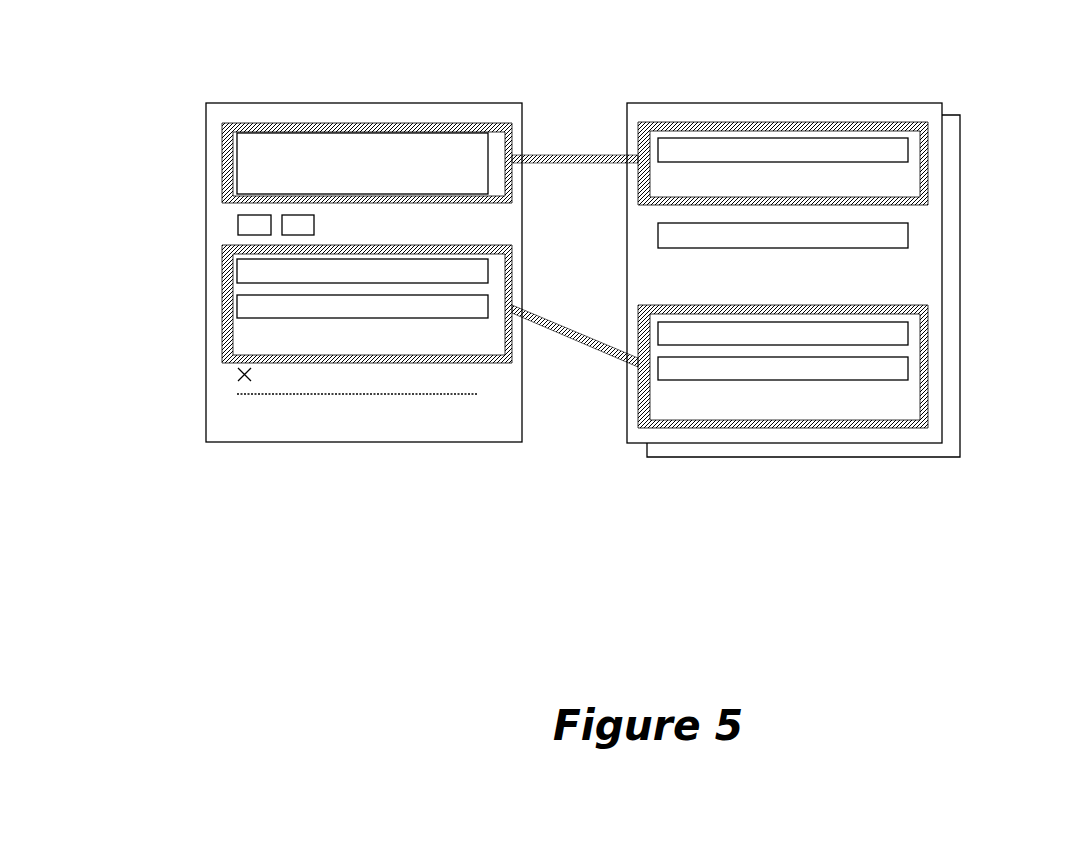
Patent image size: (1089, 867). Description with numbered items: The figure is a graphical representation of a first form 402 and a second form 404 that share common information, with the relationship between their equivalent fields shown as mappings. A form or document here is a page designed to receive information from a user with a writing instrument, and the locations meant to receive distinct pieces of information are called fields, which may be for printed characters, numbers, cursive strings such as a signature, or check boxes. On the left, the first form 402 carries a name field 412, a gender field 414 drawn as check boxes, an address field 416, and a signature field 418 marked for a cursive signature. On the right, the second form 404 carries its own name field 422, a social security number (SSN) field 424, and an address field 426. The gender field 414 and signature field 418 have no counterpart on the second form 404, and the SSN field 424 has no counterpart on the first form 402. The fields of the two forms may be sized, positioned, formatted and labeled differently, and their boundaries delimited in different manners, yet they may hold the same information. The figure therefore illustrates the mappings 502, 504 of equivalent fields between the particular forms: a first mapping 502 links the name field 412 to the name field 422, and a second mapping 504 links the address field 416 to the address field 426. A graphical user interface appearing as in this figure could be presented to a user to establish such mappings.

The first form 402 is at (343, 442).
The second form 404 is at (700, 457).
The name field 412 is at (237, 165).
The gender field 414 is at (237, 228).
The address field 416 is at (237, 273).
The signature field 418 is at (240, 374).
The name field 422 is at (908, 150).
The social security number (SSN) field 424 is at (908, 235).
The address field 426 is at (908, 368).
The mapping of equivalent fields 502 is at (557, 156).
The mapping of equivalent fields 504 is at (582, 342).